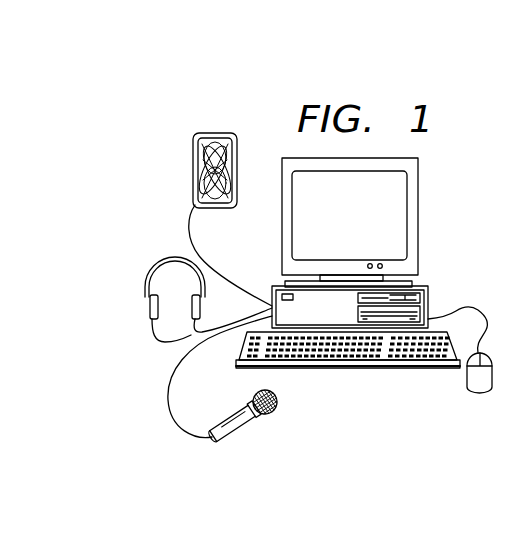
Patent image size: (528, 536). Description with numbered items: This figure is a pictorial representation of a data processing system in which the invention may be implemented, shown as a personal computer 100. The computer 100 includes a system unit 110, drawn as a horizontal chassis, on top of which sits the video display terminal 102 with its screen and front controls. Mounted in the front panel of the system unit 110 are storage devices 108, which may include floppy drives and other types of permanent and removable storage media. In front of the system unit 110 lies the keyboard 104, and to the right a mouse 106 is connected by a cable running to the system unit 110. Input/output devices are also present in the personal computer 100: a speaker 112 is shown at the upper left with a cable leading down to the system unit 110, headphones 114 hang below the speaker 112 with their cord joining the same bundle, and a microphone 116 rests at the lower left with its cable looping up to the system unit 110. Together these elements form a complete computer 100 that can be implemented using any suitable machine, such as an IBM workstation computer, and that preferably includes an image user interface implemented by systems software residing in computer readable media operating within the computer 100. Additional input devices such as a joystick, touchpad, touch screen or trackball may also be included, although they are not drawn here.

The computer 100 is at (472, 157).
The video display terminal 102 is at (419, 218).
The keyboard 104 is at (346, 370).
The mouse 106 is at (478, 388).
The storage devices 108 is at (404, 300).
The system unit 110 is at (429, 299).
The speaker 112 is at (213, 133).
The headphones 114 is at (175, 256).
The microphone 116 is at (240, 428).